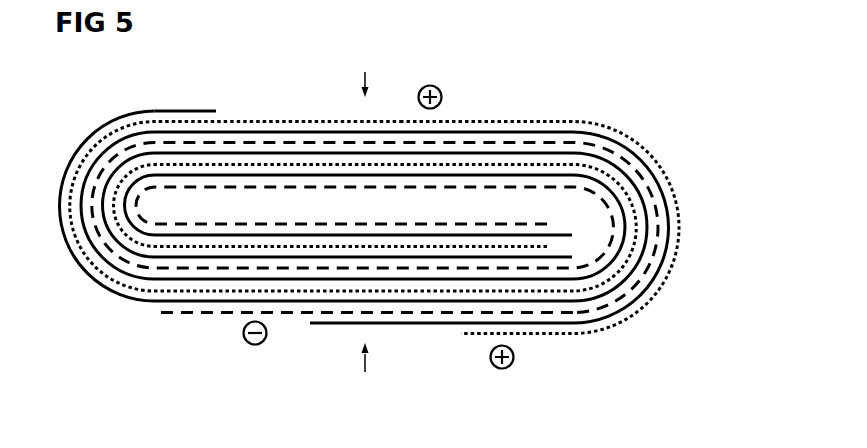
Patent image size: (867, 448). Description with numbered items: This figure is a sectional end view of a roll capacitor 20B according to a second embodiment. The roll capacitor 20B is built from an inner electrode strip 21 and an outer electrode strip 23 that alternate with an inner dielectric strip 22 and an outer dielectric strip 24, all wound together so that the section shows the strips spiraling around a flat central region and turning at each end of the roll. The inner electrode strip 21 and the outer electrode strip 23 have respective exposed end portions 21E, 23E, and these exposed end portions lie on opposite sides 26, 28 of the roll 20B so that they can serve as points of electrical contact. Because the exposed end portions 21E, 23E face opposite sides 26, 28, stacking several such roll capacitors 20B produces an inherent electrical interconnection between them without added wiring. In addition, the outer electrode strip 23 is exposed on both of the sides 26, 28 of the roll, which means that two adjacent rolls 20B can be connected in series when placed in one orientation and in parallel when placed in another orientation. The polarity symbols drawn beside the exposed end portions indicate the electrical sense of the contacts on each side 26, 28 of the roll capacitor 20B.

The roll capacitor 20B is at (414, 223).
The inner electrode strip 21 is at (257, 141).
The exposed end portion of inner electrode 21E is at (209, 314).
The inner dielectric strip 22 is at (303, 131).
The outer electrode strip 23 is at (110, 277).
The exposed end portion of outer electrode 23E is at (491, 120).
The outer dielectric strip 24 is at (187, 108).
The side of the roll 26 is at (364, 70).
The side of the roll 28 is at (364, 373).